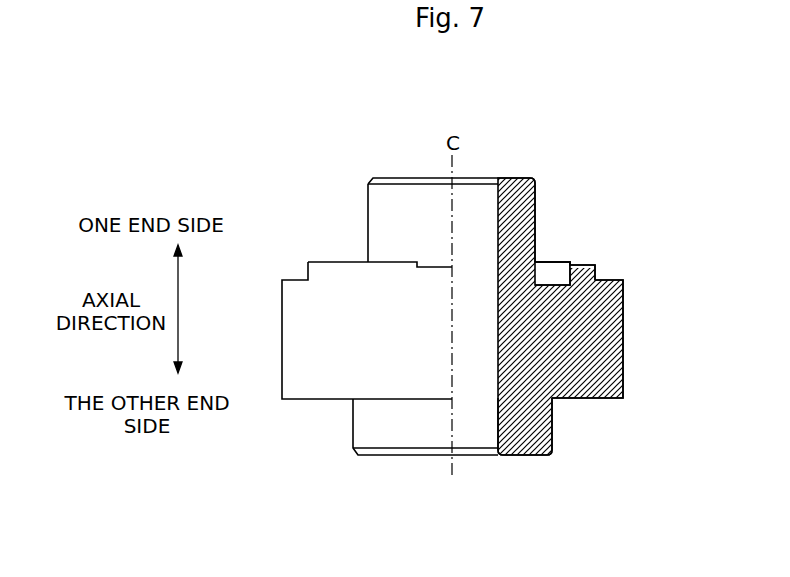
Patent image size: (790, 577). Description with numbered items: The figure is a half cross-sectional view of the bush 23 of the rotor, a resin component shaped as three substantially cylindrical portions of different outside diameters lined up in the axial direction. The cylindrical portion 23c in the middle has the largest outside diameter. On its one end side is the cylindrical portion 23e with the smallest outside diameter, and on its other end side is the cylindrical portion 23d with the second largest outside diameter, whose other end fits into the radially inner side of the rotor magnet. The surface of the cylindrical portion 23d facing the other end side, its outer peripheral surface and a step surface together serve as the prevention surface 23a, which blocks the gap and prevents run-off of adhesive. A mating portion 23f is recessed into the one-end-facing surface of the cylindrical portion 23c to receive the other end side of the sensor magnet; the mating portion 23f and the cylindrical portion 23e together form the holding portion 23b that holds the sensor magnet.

The bush 23 is at (248, 170).
The prevention surface 23a is at (382, 461).
The holding portion 23b is at (555, 188).
The cylindrical portion 23c is at (623, 341).
The cylindrical portion 23d is at (552, 432).
The cylindrical portion 23e is at (539, 208).
The mating portion 23f is at (557, 278).